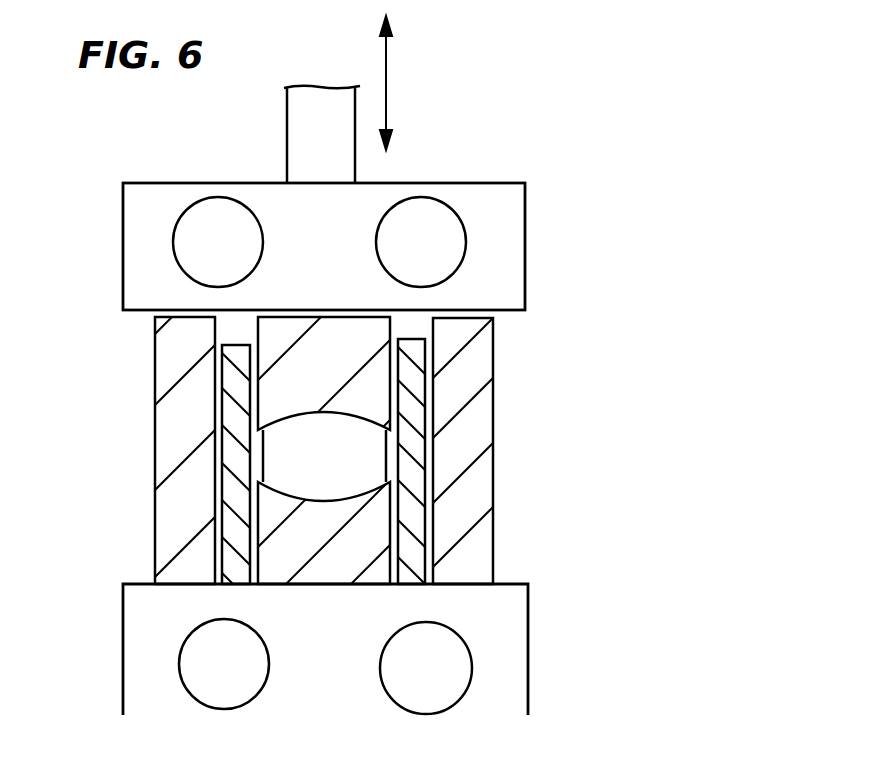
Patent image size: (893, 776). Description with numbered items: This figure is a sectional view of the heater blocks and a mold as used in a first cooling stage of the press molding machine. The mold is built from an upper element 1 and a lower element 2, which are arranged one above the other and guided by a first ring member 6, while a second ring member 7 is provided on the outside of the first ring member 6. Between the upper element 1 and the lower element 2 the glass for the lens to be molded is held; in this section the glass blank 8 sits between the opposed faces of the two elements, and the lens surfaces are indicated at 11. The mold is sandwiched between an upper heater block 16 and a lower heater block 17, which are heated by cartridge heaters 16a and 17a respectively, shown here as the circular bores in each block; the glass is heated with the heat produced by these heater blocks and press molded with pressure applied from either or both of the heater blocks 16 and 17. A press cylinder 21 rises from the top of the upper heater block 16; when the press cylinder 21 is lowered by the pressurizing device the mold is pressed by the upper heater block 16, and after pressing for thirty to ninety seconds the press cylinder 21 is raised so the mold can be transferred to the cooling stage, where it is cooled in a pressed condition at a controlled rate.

The upper element 1 is at (378, 372).
The lower element 2 is at (372, 540).
The first ring member 6 is at (413, 394).
The second ring member 7 is at (477, 418).
The glass blank (lens) 8 is at (373, 472).
The lens surfaces 11 is at (279, 450).
The upper heater block 16 is at (525, 208).
The cartridge heater 16a is at (435, 215).
The lower heater block 17 is at (528, 646).
The cartridge heater 17a is at (440, 648).
The press cylinder 21 is at (301, 118).